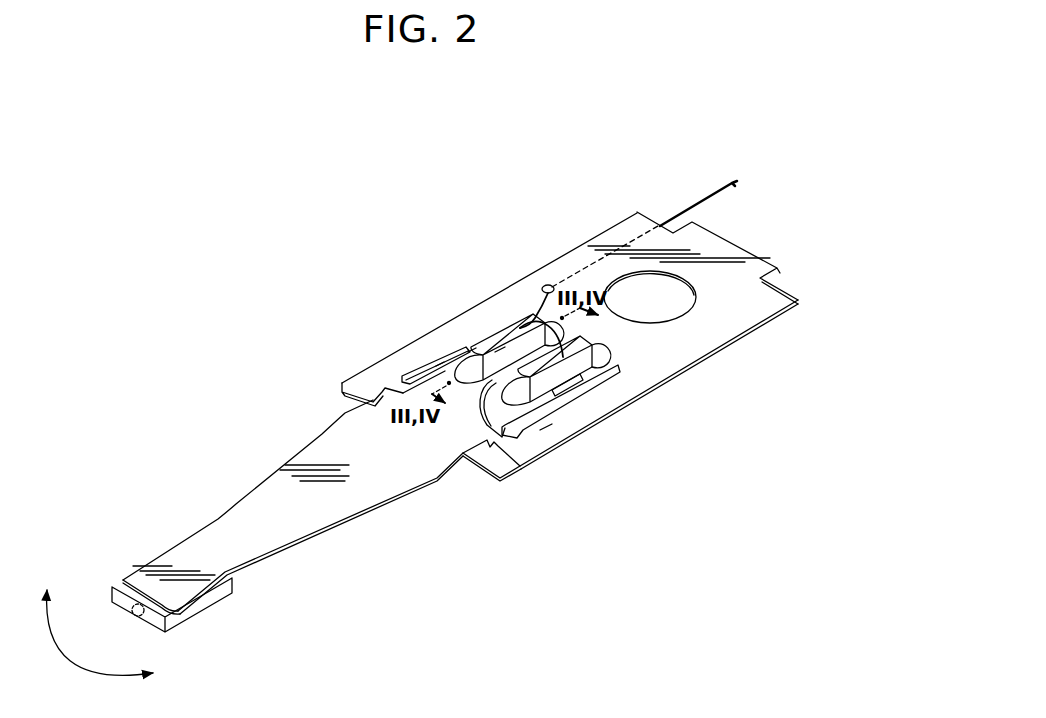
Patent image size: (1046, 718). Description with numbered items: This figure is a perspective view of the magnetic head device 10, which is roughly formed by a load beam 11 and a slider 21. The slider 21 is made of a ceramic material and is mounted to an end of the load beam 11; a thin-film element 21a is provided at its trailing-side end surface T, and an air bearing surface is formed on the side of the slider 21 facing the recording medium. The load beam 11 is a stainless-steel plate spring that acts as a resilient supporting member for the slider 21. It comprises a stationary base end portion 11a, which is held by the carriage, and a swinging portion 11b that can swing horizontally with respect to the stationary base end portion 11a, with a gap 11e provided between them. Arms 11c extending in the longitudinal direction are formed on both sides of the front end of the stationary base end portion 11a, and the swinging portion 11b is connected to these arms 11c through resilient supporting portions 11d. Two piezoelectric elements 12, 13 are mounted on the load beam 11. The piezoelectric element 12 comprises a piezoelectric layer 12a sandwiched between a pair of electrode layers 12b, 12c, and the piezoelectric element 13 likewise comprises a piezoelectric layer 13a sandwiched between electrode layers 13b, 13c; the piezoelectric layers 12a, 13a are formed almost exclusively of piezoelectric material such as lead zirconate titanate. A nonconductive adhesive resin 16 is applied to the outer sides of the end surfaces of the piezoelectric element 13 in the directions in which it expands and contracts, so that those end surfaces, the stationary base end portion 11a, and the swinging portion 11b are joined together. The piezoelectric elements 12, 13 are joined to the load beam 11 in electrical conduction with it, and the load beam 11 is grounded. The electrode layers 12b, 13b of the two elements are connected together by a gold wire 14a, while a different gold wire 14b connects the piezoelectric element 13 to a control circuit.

The magnetic head device 10 is at (586, 200).
The load beam 11 is at (594, 438).
The stationary base end portion 11a is at (743, 303).
The swinging portion 11b is at (282, 512).
The arm 11c is at (410, 366).
The resilient supporting portion 11d is at (370, 378).
The gap 11e is at (490, 405).
The piezoelectric element 12 is at (598, 371).
The piezoelectric layer 12a is at (551, 390).
The electrode layer 12b is at (606, 350).
The electrode layer 12c is at (604, 422).
The piezoelectric element 13 is at (519, 313).
The piezoelectric layer 13a is at (500, 360).
The electrode layer 13b is at (440, 363).
The electrode layer 13c is at (477, 347).
The gold wire 14a is at (585, 340).
The gold wire 14b is at (545, 285).
The nonconductive adhesive resin 16 is at (573, 333).
The slider 21 is at (188, 613).
The thin-film element 21a is at (132, 615).
The trailing-side end surface T is at (106, 587).